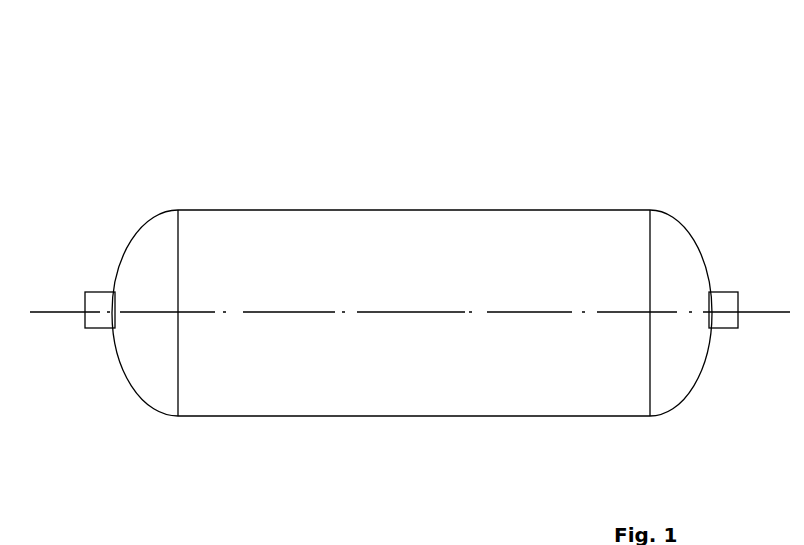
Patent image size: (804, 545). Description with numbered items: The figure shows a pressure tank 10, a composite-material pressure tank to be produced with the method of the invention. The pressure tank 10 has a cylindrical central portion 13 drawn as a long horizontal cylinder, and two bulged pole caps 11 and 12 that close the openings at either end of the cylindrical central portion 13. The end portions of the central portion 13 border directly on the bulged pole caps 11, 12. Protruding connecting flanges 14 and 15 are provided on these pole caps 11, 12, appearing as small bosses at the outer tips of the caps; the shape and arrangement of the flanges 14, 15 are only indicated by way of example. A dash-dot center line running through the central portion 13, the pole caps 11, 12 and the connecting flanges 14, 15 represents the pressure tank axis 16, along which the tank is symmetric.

The pressure tank 10 is at (283, 110).
The pole cap 11 is at (155, 238).
The pole cap 12 is at (668, 240).
The central portion 13 is at (418, 228).
The connecting flange 14 is at (93, 292).
The connecting flange 15 is at (729, 292).
The pressure tank axis 16 is at (762, 314).